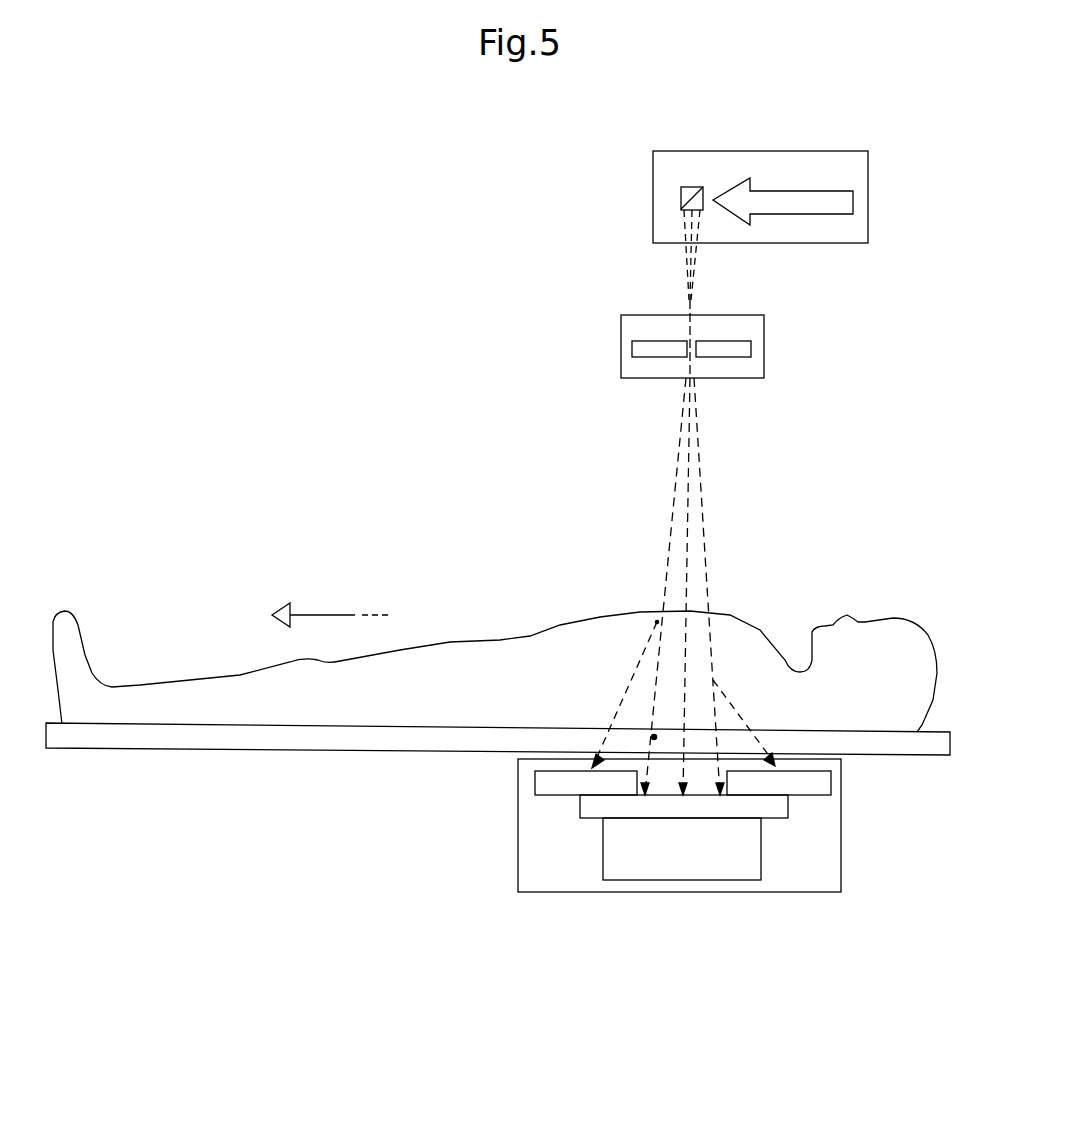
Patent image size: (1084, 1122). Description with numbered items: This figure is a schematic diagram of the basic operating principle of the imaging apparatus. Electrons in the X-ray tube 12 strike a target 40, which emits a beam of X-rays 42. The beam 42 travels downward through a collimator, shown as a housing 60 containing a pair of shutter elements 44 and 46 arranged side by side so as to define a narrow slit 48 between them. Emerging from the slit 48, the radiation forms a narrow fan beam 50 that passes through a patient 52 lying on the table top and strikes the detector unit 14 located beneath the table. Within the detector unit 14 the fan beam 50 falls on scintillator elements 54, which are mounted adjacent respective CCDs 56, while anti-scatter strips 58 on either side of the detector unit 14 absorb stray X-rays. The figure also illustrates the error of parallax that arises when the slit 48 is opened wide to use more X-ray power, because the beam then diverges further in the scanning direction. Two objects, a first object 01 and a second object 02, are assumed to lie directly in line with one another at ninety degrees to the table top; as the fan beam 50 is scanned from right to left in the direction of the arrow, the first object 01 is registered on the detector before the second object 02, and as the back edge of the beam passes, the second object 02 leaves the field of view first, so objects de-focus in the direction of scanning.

The X-ray tube 12 is at (762, 151).
The target 40 is at (681, 198).
The beam of X-rays 42 is at (686, 290).
The housing 60 is at (621, 357).
The shutter element 44 is at (650, 357).
The shutter element 46 is at (730, 357).
The narrow slit 48 is at (693, 357).
The narrow fan beam 50 is at (703, 535).
The patient 52 is at (586, 620).
The object O2 02 is at (637, 632).
The object O1 01 is at (662, 725).
The detector unit 14 is at (780, 892).
The scintillator elements 54 is at (560, 795).
The anti-scatter strips 58 is at (815, 795).
The CCDs 56 is at (676, 880).